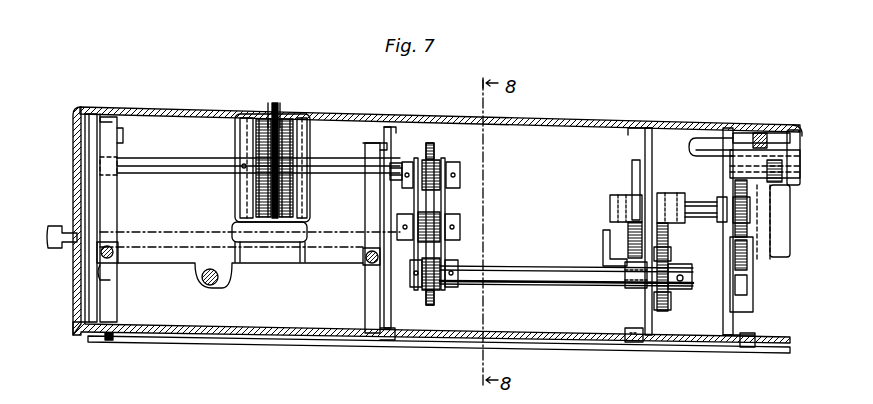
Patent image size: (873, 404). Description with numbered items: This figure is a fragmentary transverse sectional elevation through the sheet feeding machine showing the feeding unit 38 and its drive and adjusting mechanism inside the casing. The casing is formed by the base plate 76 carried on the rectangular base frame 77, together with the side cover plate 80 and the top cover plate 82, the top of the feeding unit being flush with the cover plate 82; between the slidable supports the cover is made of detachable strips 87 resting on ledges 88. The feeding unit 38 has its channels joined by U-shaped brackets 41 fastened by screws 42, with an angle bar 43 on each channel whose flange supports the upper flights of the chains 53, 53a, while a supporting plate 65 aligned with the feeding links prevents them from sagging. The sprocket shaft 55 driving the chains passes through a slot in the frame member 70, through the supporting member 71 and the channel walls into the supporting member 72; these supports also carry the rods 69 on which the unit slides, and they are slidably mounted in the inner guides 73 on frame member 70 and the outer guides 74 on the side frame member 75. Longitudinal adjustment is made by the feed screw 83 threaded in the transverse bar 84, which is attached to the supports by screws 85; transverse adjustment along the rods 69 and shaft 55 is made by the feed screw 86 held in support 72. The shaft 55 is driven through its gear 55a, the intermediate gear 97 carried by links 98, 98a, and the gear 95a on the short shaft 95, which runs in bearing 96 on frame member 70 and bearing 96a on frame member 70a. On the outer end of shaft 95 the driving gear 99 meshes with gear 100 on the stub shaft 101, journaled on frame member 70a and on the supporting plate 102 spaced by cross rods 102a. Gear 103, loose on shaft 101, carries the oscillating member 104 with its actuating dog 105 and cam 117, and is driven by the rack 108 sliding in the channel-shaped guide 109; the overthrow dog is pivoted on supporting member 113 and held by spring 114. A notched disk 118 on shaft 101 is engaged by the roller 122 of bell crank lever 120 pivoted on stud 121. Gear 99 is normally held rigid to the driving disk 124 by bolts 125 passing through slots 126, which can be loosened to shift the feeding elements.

The feeding unit 38 is at (293, 125).
The U-shaped brackets 41 is at (222, 232).
The screws 42 is at (250, 236).
The angle bar 43 is at (243, 132).
The chain 53 is at (253, 207).
The chain 53a is at (293, 210).
The sprocket shaft 55 is at (197, 160).
The gear 55a is at (433, 143).
The supporting plate 65 is at (285, 125).
The rods 69 is at (165, 234).
The frame member 70 is at (380, 302).
The frame member 70a is at (645, 315).
The supporting member 71 is at (370, 205).
The supporting member 72 is at (110, 206).
The inner guides 73 is at (377, 143).
The outer guides 74 is at (110, 135).
The side frame member 75 is at (93, 187).
The base plate 76 is at (363, 338).
The base frame 77 is at (103, 339).
The side cover plate 80 is at (77, 158).
The top cover plate 82 is at (550, 121).
The feed screw 83 is at (210, 286).
The transverse bar 84 is at (315, 263).
The screws 85 is at (118, 258).
The feed screw 86 is at (50, 243).
The detachable strips 87 is at (200, 106).
The ledges 88 is at (115, 108).
The short shaft 95 is at (517, 283).
The gear 95a is at (432, 305).
The bearing 96 is at (393, 290).
The bearing 96a is at (655, 345).
The intermediate gear 97 is at (423, 203).
The link 98 is at (444, 200).
The link 98a is at (462, 256).
The driving gear 99 is at (663, 308).
The gear 100 is at (652, 132).
The stub shaft 101 is at (692, 192).
The supporting plate 102 is at (723, 300).
The cross rods 102a is at (712, 145).
The gear 103 is at (762, 219).
The oscillating member 104 is at (752, 270).
The actuating dog 105 is at (805, 132).
The rack 108 is at (742, 283).
The channel-shaped guide 109 is at (735, 308).
The supporting member 113 is at (733, 177).
The spring 114 is at (762, 136).
The cam 117 is at (760, 210).
The disk 118 is at (638, 175).
The bell crank lever 120 is at (603, 243).
The stud 121 is at (623, 288).
The roller 122 is at (627, 232).
The driving disk 124 is at (670, 252).
The bolts 125 is at (675, 259).
The slots 126 is at (668, 300).